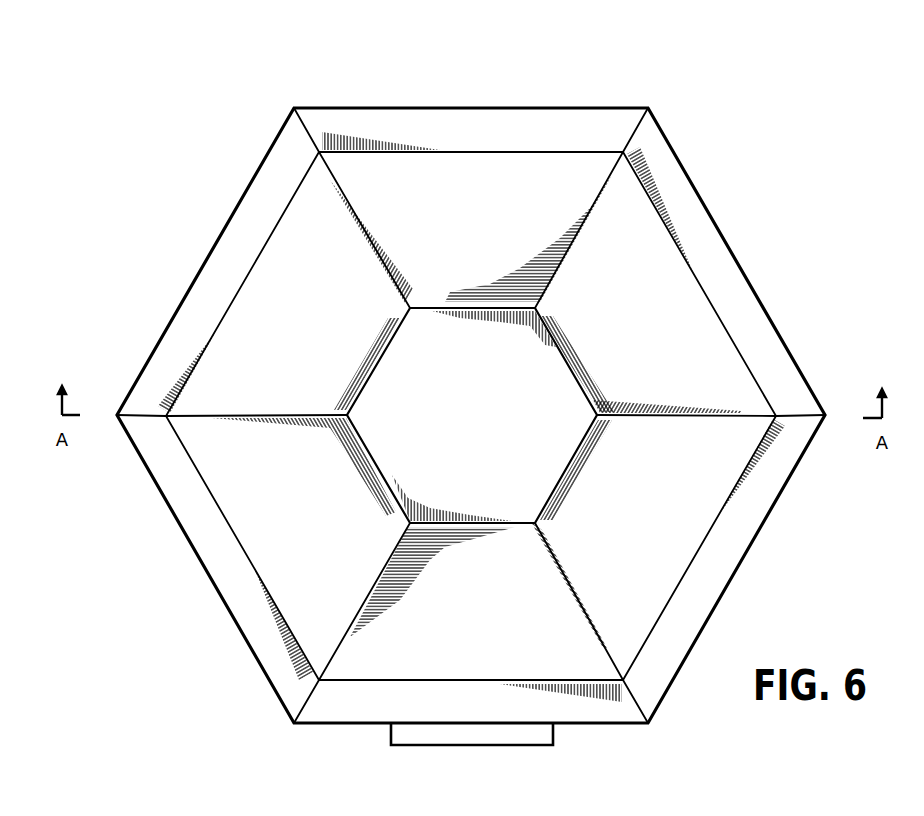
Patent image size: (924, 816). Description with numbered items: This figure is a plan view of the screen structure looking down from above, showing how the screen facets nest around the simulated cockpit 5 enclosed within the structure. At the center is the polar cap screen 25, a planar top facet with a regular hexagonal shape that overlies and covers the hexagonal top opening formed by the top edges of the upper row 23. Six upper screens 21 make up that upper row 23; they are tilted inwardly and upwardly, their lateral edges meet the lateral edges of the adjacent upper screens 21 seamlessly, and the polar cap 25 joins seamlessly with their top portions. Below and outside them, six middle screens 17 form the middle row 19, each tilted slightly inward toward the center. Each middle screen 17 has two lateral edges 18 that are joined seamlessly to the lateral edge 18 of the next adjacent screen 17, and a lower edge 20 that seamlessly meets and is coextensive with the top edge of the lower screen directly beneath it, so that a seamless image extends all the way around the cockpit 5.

The simulated cockpit 5 is at (527, 737).
The middle screen 17 is at (437, 128).
The lateral edge 18 is at (312, 130).
The middle row 19 is at (688, 200).
The lower edge 20 is at (538, 103).
The upper screen 21 is at (472, 218).
The upper row 23 is at (702, 353).
The polar cap screen 25 is at (472, 415).